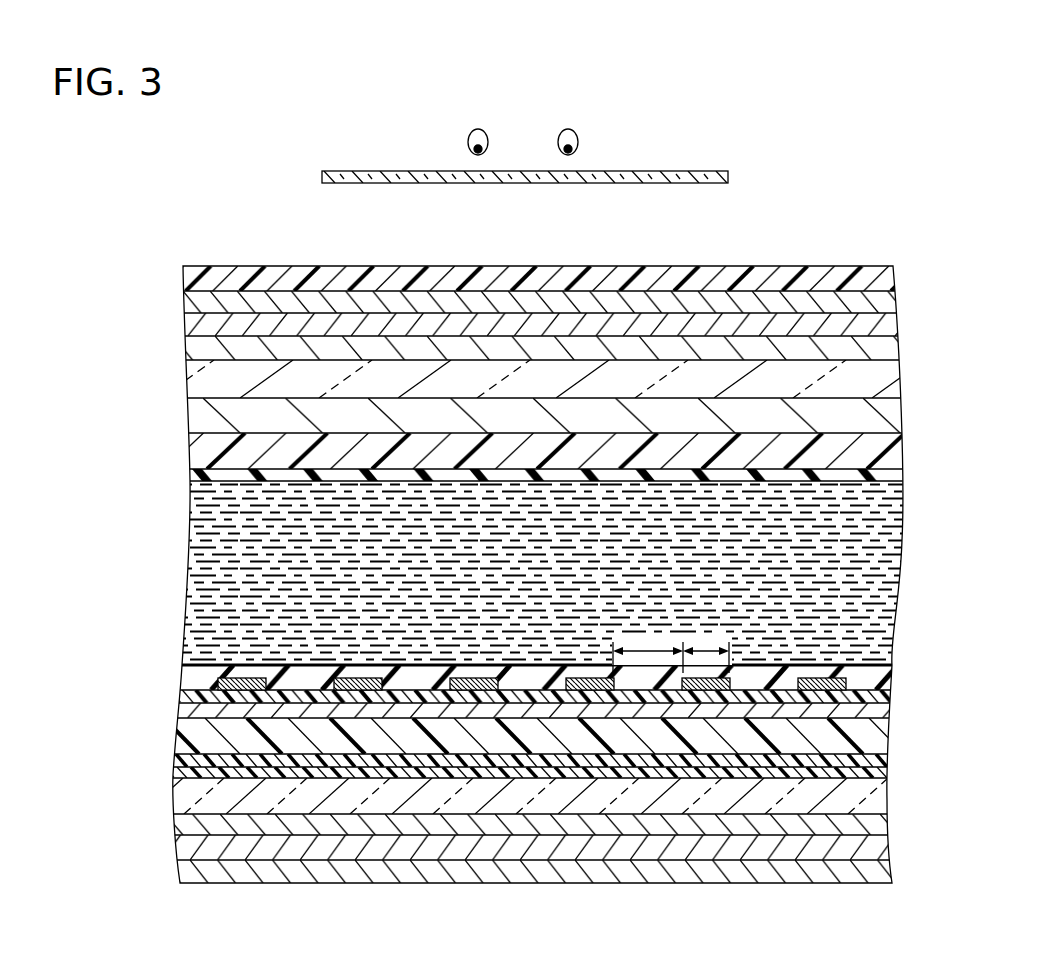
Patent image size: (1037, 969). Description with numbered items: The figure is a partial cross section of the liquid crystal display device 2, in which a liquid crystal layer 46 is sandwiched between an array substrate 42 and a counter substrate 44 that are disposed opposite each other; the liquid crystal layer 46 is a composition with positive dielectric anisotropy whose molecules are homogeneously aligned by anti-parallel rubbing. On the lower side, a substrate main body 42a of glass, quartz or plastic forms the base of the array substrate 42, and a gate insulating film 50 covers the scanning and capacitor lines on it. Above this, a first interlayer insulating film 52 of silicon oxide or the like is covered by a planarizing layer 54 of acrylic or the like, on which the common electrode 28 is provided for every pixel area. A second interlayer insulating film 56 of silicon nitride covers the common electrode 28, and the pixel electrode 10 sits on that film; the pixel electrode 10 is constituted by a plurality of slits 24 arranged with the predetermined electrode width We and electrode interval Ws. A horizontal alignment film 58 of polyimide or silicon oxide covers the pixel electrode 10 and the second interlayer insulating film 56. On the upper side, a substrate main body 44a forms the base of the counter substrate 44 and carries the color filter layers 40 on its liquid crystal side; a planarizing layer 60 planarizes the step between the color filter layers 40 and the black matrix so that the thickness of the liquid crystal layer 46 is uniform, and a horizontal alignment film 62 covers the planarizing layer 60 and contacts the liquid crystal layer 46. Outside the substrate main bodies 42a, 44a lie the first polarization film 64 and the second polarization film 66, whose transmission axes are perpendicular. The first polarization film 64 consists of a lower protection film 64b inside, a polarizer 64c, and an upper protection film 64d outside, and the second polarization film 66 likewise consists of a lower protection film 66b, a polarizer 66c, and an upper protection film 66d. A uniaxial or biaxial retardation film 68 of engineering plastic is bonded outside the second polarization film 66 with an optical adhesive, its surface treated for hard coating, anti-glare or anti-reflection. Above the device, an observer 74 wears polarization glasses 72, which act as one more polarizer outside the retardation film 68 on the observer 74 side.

The liquid crystal display device 2 is at (862, 205).
The pixel electrode 10 is at (730, 687).
The slits 24 is at (605, 646).
The common electrode 28 is at (886, 715).
The color filter layers 40 is at (886, 420).
The array substrate 42 is at (126, 779).
The substrate main body 42a is at (880, 800).
The counter substrate 44 is at (128, 358).
The substrate main body 44a is at (885, 386).
The liquid crystal layer 46 is at (886, 544).
The gate insulating film 50 is at (885, 774).
The first interlayer insulating film 52 is at (885, 762).
The planarizing layer 54 is at (885, 740).
The second interlayer insulating film 56 is at (888, 700).
The horizontal alignment film 58 is at (892, 673).
The planarizing layer 60 is at (887, 456).
The horizontal alignment film 62 is at (888, 478).
The first polarization film 64 is at (596, 854).
The lower protection film 64b is at (886, 872).
The polarizer 64c is at (885, 849).
The upper protection film 64d is at (884, 826).
The second polarization film 66 is at (596, 326).
The lower protection film 66b is at (884, 356).
The polarizer 66c is at (884, 331).
The upper protection film 66d is at (883, 306).
The retardation film 68 is at (882, 282).
The polarization glasses 72 is at (730, 177).
The observer 74 is at (588, 127).